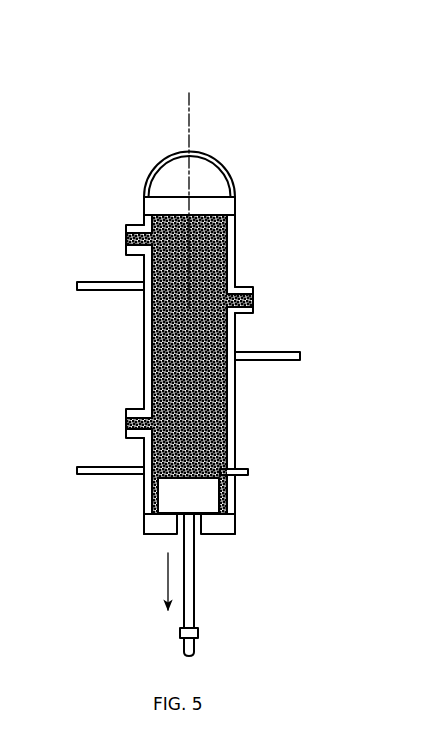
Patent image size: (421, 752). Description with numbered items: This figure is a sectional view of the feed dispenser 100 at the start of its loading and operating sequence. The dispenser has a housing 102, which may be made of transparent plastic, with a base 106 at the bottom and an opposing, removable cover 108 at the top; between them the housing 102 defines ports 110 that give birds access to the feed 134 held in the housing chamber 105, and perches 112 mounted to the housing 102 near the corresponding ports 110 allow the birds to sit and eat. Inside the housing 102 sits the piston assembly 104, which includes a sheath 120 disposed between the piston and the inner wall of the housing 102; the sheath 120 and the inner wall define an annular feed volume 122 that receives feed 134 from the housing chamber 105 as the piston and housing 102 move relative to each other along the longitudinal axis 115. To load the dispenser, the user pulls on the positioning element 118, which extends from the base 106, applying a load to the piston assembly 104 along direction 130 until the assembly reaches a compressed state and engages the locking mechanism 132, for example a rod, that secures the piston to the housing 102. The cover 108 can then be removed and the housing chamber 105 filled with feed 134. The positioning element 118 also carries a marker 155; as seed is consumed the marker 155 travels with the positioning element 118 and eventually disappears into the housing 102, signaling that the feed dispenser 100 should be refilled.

The feed dispenser 100 is at (212, 354).
The housing 102 is at (233, 280).
The piston assembly 104 is at (206, 474).
The housing chamber 105 is at (157, 393).
The base 106 is at (228, 535).
The cover 108 is at (143, 208).
The ports 110 is at (261, 293).
The perches 112 is at (258, 352).
The longitudinal axis 115 is at (189, 115).
The positioning element 118 is at (197, 617).
The sheath 120 is at (227, 497).
The feed volume 122 is at (153, 497).
The direction 130 is at (168, 585).
The locking mechanism 132 is at (253, 472).
The feed 134 is at (176, 347).
The marker 155 is at (180, 633).